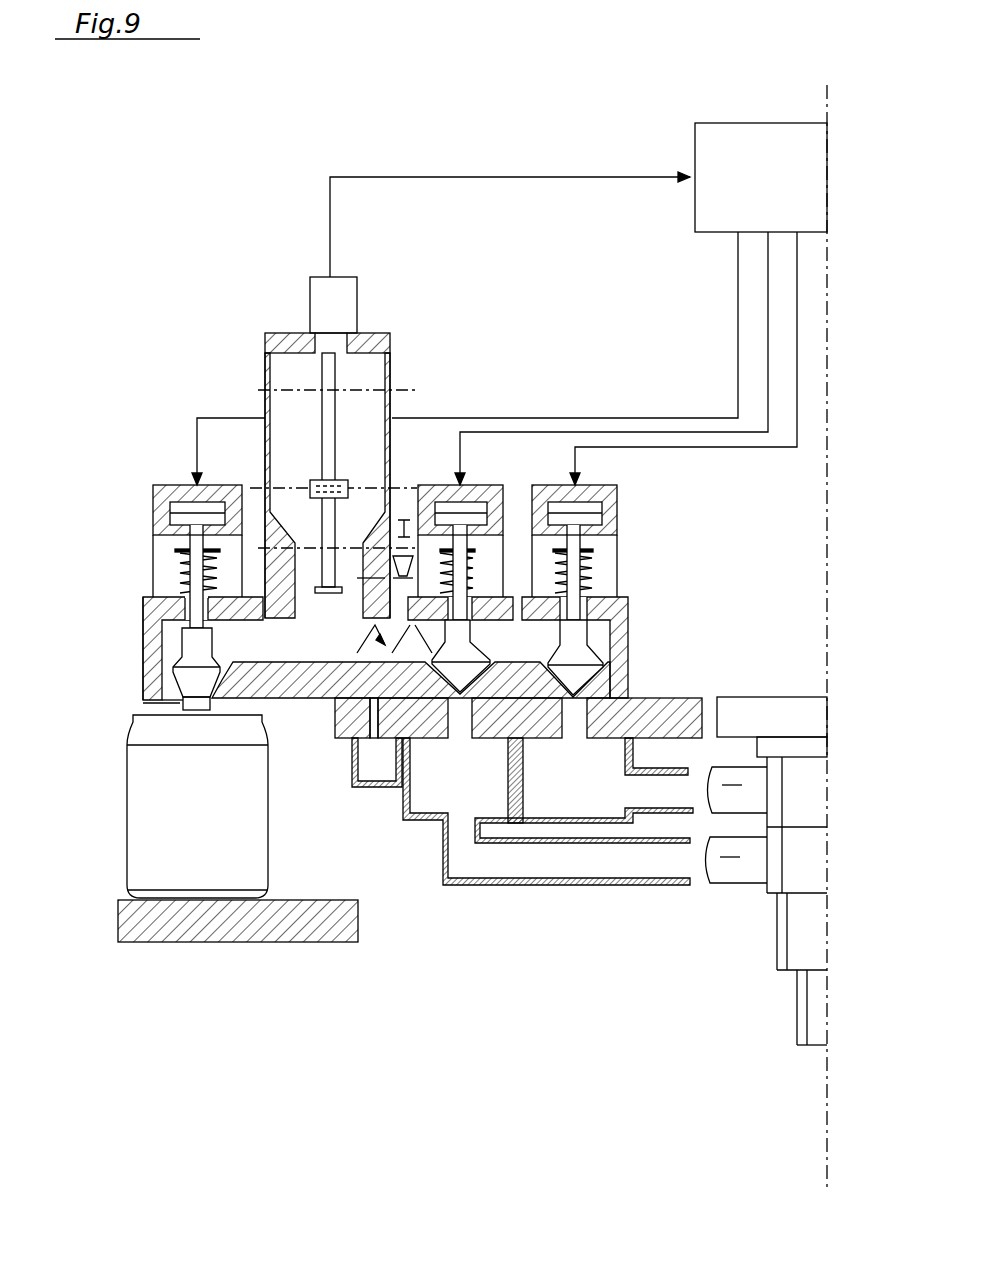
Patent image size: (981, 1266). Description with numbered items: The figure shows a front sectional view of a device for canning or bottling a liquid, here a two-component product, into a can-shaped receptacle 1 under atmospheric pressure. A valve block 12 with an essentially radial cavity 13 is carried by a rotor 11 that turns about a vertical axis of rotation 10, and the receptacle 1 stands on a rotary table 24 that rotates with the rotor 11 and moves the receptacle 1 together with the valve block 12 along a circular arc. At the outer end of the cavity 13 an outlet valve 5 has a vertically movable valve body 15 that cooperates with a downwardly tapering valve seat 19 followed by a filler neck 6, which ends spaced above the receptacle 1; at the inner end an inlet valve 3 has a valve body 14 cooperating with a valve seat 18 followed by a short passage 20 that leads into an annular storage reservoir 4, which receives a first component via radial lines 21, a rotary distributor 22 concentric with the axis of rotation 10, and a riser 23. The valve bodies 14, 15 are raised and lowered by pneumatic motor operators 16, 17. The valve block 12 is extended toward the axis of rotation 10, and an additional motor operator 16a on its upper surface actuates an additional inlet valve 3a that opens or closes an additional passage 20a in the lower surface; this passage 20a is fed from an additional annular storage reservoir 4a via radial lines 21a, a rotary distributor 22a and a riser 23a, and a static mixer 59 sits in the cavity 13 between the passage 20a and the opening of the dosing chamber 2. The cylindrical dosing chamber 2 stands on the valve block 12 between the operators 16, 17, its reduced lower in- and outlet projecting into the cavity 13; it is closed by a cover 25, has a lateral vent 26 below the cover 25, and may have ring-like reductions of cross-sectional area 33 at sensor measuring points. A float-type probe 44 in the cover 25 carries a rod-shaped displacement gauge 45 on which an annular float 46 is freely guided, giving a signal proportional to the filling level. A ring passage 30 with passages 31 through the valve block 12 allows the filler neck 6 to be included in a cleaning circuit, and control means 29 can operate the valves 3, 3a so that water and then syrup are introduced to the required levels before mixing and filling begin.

The can-shaped receptacle 1 is at (150, 812).
The dosing chamber 2 is at (266, 378).
The inlet valve 3 is at (597, 638).
The additional inlet valve 3a is at (496, 650).
The annular storage reservoir 4 is at (590, 795).
The additional annular storage reservoir 4a is at (468, 795).
The outlet valve 5 is at (188, 659).
The filler neck 6 is at (205, 700).
The axis of rotation 10 is at (827, 1175).
The rotor 11 is at (748, 717).
The valve block 12 is at (150, 617).
The cavity 13 is at (345, 647).
The valve body 14 is at (607, 678).
The valve body 15 is at (175, 668).
The motor operator 16 is at (617, 507).
The additional motor operator 16a is at (492, 490).
The motor operator 17 is at (153, 498).
The valve seat 18 is at (632, 683).
The valve seat 19 is at (158, 696).
The passage 20 is at (640, 718).
The additional passage 20a is at (460, 717).
The radial lines 21 is at (740, 795).
The radial lines 21a is at (596, 857).
The rotary distributor 22 is at (805, 812).
The rotary distributor 22a is at (795, 873).
The riser 23 is at (818, 1028).
The riser 23a is at (803, 950).
The rotary table 24 is at (280, 925).
The cover 25 is at (372, 334).
The lateral vent 26 is at (390, 346).
The control means 29 is at (782, 188).
The ring passage 30 is at (376, 777).
The passage 31 is at (336, 740).
The reductions of cross-sectional area 33 is at (310, 583).
The float-type probe 44 is at (330, 296).
The displacement gauge 45 is at (330, 376).
The float 46 is at (330, 486).
The static mixer 59 is at (316, 700).